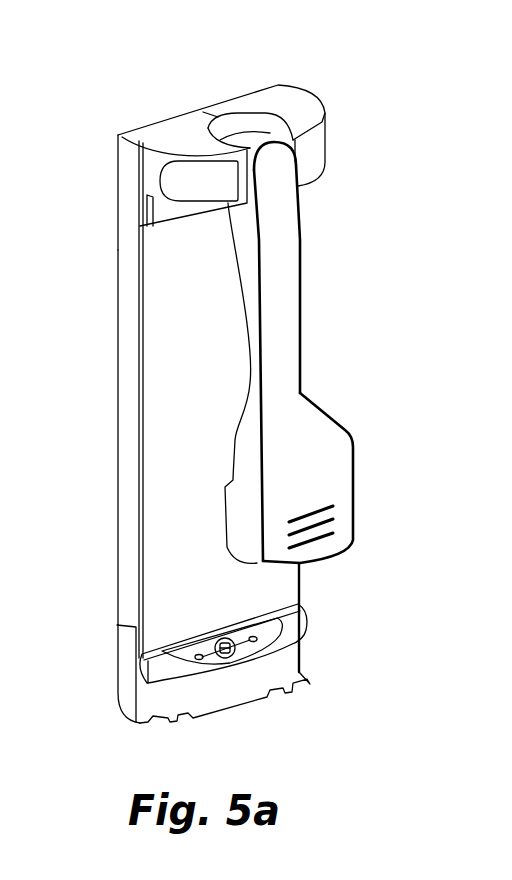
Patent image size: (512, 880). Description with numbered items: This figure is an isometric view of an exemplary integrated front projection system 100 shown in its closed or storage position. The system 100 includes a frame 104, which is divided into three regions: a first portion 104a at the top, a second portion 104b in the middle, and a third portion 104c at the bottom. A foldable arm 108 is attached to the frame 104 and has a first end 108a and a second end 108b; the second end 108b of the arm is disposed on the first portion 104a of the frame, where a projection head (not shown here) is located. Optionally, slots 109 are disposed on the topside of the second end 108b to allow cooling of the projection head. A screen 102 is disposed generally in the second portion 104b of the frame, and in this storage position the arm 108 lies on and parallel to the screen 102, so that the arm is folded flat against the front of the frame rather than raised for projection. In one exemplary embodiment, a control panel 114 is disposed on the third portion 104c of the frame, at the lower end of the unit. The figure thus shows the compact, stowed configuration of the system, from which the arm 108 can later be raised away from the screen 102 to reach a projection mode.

The integrated front projection system 100 is at (225, 65).
The screen 102 is at (280, 587).
The frame 104 is at (162, 130).
The first portion of frame 104a is at (128, 169).
The second portion of frame 104b is at (130, 420).
The third portion of frame 104c is at (125, 668).
The foldable arm 108 is at (285, 300).
The first end of arm 108a is at (338, 470).
The second end of arm 108b is at (277, 163).
The slots 109 is at (318, 508).
The control panel 114 is at (293, 624).